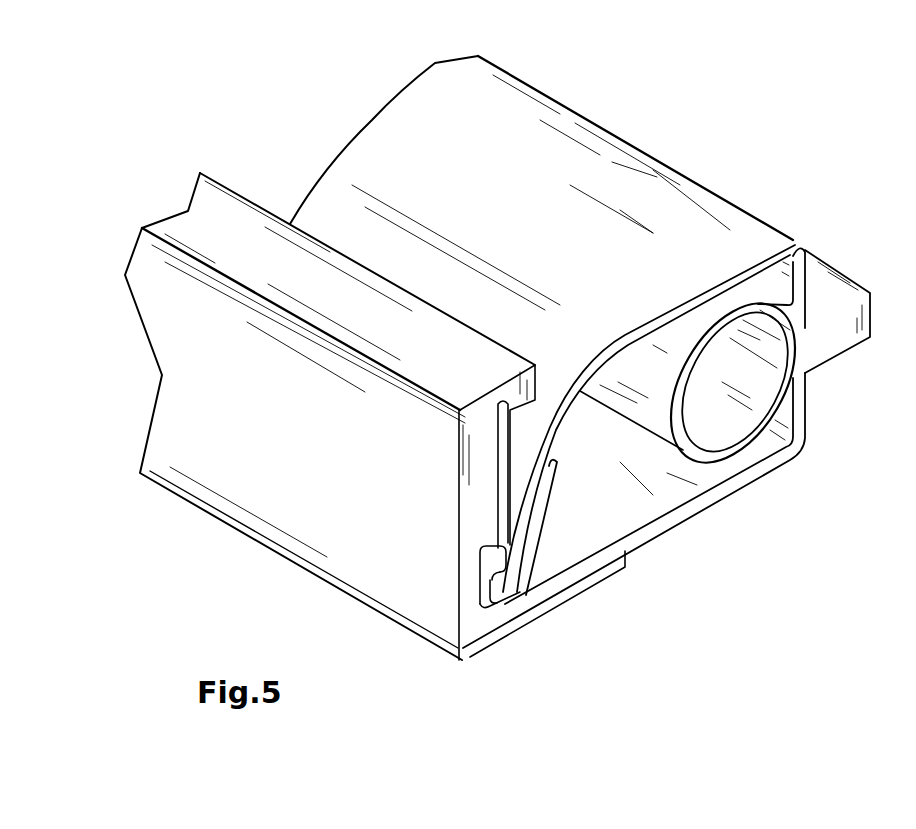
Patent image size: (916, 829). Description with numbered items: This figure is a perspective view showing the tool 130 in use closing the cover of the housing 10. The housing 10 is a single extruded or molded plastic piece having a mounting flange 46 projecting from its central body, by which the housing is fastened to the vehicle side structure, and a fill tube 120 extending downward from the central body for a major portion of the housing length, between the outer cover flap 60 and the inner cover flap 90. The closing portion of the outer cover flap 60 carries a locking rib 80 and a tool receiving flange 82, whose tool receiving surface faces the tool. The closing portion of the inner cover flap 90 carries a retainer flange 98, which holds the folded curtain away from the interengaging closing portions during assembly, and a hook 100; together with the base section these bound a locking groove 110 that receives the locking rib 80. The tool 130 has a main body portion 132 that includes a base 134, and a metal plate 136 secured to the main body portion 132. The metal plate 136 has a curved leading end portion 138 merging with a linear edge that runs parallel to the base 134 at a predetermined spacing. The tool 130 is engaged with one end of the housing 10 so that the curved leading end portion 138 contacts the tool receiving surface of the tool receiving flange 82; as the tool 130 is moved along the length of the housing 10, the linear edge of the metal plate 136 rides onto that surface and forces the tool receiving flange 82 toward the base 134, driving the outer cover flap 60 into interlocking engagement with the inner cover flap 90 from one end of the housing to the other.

The housing 10 is at (642, 143).
The mounting flange 46 is at (841, 327).
The outer cover flap 60 is at (679, 277).
The locking rib 80 is at (510, 582).
The tool receiving flange 82 is at (470, 553).
The inner cover flap 90 is at (699, 524).
The retainer flange 98 is at (545, 494).
The hook 100 is at (478, 601).
The locking groove 110 is at (500, 607).
The fill tube 120 is at (757, 300).
The tool 130 is at (308, 581).
The main body portion 132 is at (347, 596).
The base 134 is at (600, 583).
The metal plate 136 is at (498, 449).
The curved leading end portion 138 is at (893, 420).